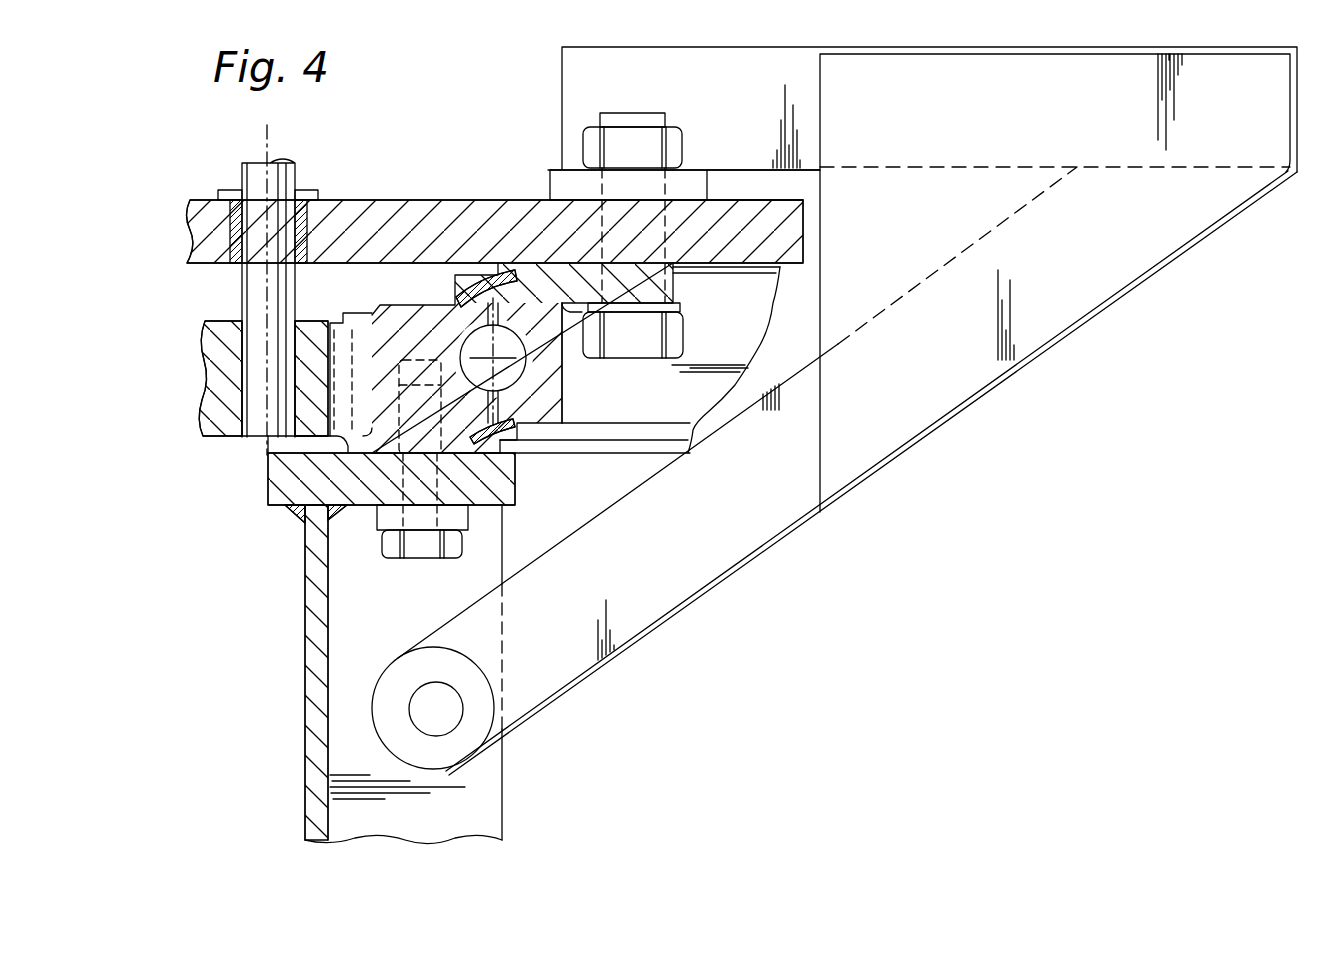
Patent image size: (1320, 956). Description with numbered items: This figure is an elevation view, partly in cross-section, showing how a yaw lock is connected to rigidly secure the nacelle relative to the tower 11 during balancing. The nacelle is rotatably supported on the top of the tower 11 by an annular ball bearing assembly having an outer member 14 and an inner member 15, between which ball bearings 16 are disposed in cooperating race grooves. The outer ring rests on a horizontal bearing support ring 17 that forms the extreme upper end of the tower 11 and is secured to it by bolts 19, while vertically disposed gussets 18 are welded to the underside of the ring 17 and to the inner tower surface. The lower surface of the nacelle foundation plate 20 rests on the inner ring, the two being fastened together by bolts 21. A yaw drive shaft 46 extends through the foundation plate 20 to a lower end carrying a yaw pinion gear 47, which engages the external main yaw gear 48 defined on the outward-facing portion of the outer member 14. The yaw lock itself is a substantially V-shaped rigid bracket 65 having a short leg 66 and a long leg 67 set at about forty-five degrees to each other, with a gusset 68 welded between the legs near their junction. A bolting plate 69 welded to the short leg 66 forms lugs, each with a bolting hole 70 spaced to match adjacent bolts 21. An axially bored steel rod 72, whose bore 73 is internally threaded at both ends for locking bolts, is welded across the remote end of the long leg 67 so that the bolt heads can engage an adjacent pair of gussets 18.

The tower 11 is at (305, 713).
The outer member of ball bearing assembly 14 is at (418, 300).
The inner member of ball bearing assembly 15 is at (560, 385).
The ball bearings 16 is at (458, 345).
The bearing support ring 17 is at (268, 475).
The gussets 18 is at (503, 812).
The bolts 19 is at (393, 560).
The nacelle foundation plate 20 is at (199, 200).
The bolts 21 is at (683, 333).
The yaw drive shaft 46 is at (240, 295).
The yaw pinion gear 47 is at (200, 372).
The main yaw gear 48 is at (365, 313).
The bracket 65 is at (1102, 341).
The short leg 66 is at (703, 58).
The long leg 67 is at (752, 556).
The gusset 68 is at (1185, 247).
The bolting plate 69 is at (548, 190).
The bolting hole 70 is at (697, 190).
The rod 72 is at (497, 697).
The bore 73 is at (455, 718).